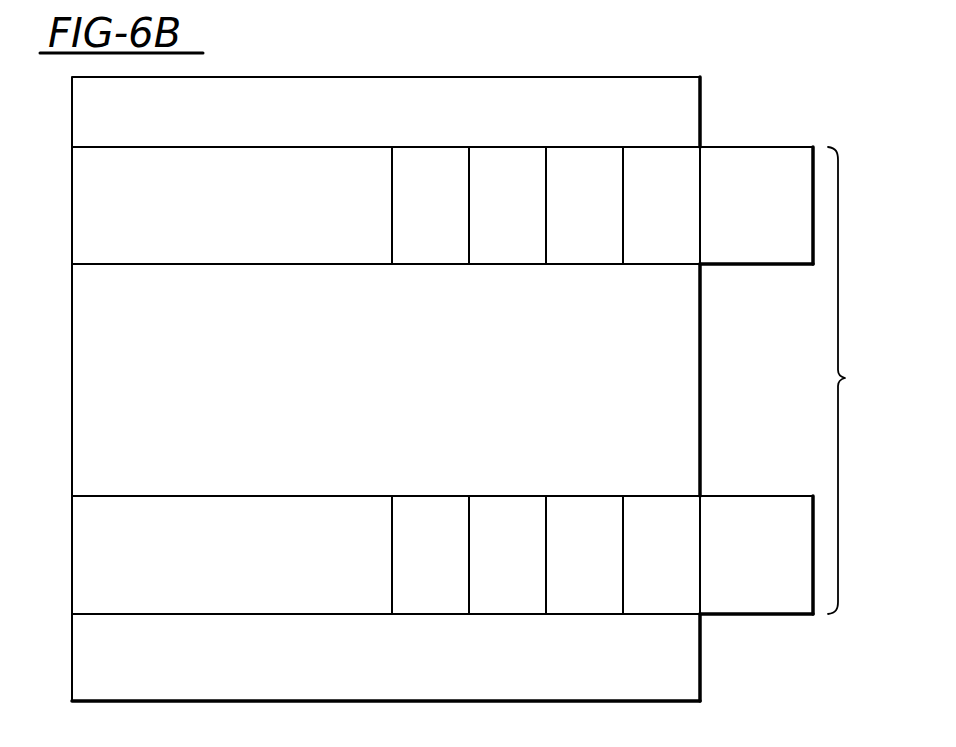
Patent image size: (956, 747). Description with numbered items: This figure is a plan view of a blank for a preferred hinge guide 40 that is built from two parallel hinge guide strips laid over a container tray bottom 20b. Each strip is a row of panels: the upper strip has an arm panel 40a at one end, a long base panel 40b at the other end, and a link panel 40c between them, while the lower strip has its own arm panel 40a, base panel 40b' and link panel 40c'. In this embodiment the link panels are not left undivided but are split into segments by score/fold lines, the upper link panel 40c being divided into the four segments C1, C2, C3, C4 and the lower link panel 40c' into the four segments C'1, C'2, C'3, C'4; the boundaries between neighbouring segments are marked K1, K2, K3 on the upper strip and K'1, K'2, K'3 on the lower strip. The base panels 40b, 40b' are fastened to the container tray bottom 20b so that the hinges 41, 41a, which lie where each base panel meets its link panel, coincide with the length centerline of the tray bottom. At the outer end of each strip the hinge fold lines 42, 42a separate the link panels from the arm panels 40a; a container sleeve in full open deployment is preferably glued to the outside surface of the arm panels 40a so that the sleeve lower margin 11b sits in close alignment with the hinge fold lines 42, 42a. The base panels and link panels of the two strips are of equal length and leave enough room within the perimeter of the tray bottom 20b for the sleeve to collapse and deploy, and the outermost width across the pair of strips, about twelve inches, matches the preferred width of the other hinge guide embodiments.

The hinge guide 40 is at (856, 380).
The arm panel 40a is at (778, 222).
The base panel 40b is at (232, 205).
The base panel 40b' is at (232, 555).
The link panel 40c is at (561, 306).
The link panel 40c' is at (564, 650).
The hinge 41 is at (391, 265).
The hinge 41a is at (391, 616).
The hinge fold line 42 is at (699, 266).
The hinge fold line 42a is at (699, 616).
The sleeve lower margin 11b is at (701, 395).
The container tray bottom 20b is at (452, 383).
The segment C1 is at (670, 194).
The segment C2 is at (598, 194).
The segment C3 is at (524, 194).
The segment C4 is at (446, 194).
The segment C'1 is at (655, 534).
The segment C'2 is at (591, 555).
The segment C'3 is at (515, 555).
The segment C'4 is at (437, 555).
The partition 1 K1 is at (625, 254).
The partition 2 K2 is at (548, 256).
The partition 3 K3 is at (471, 256).
The lower partition 1 K'1 is at (657, 582).
The lower partition 2 K'2 is at (580, 582).
The lower partition 3 K'3 is at (503, 582).